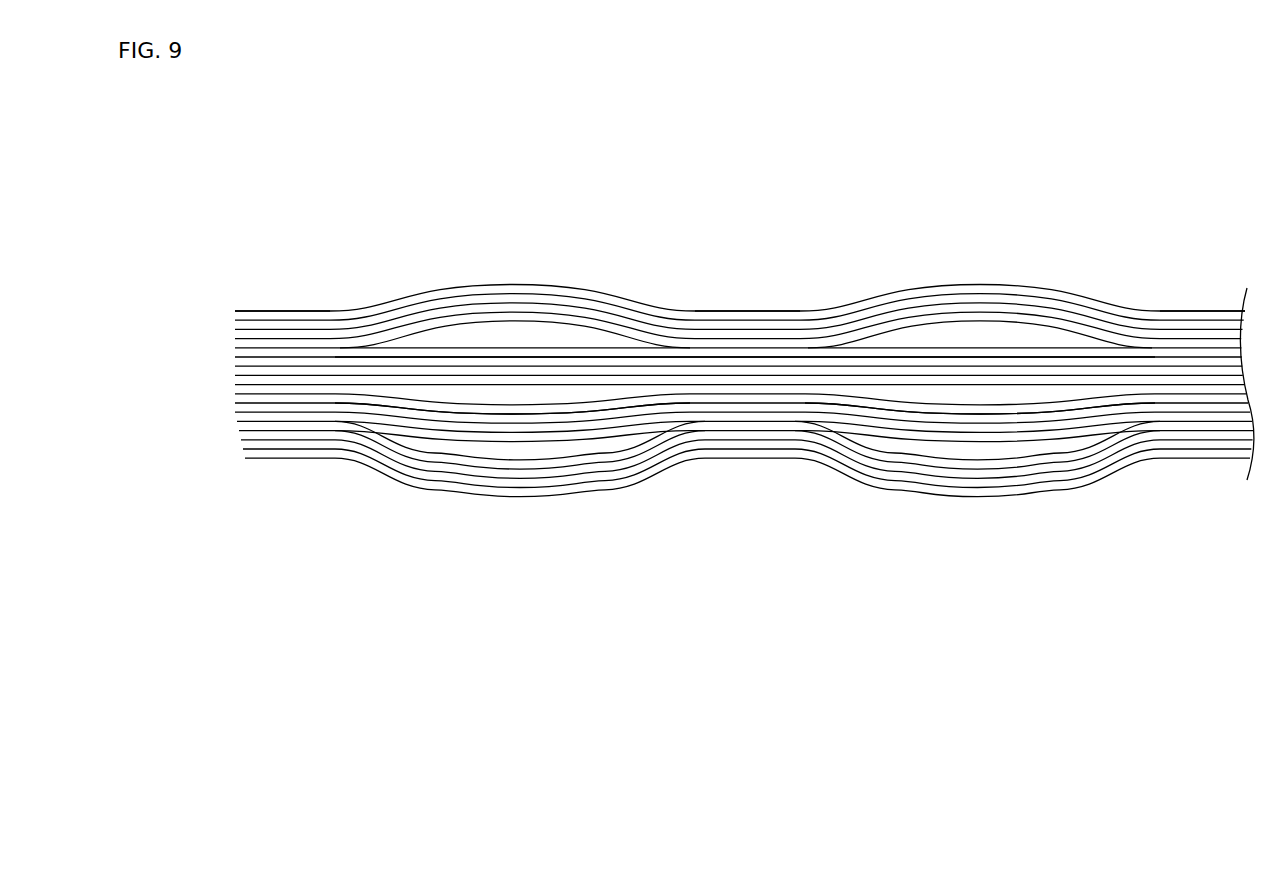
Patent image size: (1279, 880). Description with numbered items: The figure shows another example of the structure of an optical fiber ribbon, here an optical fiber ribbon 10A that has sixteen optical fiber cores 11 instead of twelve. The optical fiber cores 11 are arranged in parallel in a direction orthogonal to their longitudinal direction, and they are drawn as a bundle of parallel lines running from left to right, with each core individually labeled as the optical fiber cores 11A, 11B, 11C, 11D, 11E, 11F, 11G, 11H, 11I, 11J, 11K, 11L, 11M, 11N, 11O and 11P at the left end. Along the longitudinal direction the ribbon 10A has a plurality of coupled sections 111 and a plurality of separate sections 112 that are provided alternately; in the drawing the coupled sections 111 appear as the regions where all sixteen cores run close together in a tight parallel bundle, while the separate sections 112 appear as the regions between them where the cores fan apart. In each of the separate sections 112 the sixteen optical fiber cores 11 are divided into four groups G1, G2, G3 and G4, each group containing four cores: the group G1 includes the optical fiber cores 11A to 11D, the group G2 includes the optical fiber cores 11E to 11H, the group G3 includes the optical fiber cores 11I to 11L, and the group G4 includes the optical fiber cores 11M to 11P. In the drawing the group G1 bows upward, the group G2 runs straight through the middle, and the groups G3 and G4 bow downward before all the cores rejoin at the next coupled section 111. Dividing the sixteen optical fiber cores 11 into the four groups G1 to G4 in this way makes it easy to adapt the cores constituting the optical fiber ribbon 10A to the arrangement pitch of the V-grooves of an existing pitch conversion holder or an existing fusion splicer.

The optical fiber ribbon 10A is at (962, 236).
The optical fiber core 11 is at (686, 416).
The optical fiber core 11A is at (234, 311).
The optical fiber core 11B is at (234, 320).
The optical fiber core 11C is at (234, 329).
The optical fiber core 11D is at (234, 339).
The optical fiber core 11E is at (234, 348).
The optical fiber core 11F is at (234, 357).
The optical fiber core 11G is at (234, 366).
The optical fiber core 11H is at (234, 375).
The optical fiber core 11I is at (234, 385).
The optical fiber core 11J is at (235, 394).
The optical fiber core 11K is at (236, 403).
The optical fiber core 11L is at (237, 412).
The optical fiber core 11M is at (238, 421).
The optical fiber core 11N is at (240, 431).
The optical fiber core 11O is at (242, 440).
The optical fiber core 11P is at (244, 449).
The coupled section 111 is at (286, 292).
The separate section 112 is at (594, 514).
The group G1 is at (528, 310).
The group G2 is at (590, 377).
The group G3 is at (446, 421).
The group G4 is at (517, 478).